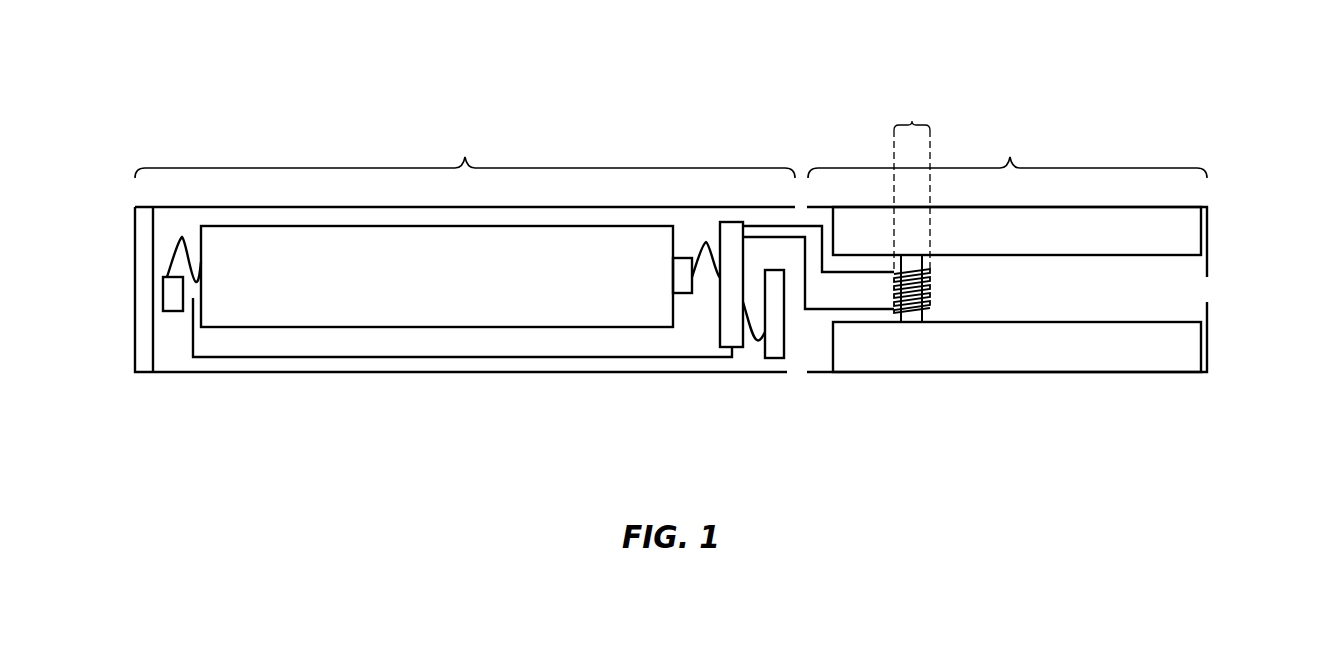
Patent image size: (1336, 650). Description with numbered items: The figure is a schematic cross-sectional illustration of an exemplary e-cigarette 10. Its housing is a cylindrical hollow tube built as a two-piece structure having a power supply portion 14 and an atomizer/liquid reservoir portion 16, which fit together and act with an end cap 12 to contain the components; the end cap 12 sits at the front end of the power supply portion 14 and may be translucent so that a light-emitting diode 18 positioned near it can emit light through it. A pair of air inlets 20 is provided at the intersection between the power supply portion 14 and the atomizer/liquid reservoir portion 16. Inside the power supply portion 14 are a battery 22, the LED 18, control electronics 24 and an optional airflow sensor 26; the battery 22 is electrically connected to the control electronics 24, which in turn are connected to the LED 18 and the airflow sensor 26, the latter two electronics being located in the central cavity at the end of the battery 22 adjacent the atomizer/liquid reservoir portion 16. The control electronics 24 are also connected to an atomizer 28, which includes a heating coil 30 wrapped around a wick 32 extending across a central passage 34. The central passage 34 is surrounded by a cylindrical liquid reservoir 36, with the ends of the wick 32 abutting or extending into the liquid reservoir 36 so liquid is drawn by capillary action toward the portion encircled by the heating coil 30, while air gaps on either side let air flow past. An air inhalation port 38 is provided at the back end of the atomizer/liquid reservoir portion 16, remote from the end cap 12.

The e-cigarette 10 is at (588, 78).
The end cap 12 is at (145, 360).
The power supply portion 14 is at (465, 153).
The atomizer/liquid reservoir portion 16 is at (1007, 153).
The light-emitting diode 18 is at (176, 305).
The air inlets 20 is at (802, 207).
The battery 22 is at (352, 298).
The control electronics 24 is at (735, 222).
The airflow sensor 26 is at (774, 345).
The atomizer 28 is at (912, 184).
The heating coil 30 is at (923, 305).
The wick 32 is at (913, 317).
The central passage 34 is at (1013, 305).
The cylindrical liquid reservoir 36 is at (1180, 230).
The air inhalation port 38 is at (1207, 288).